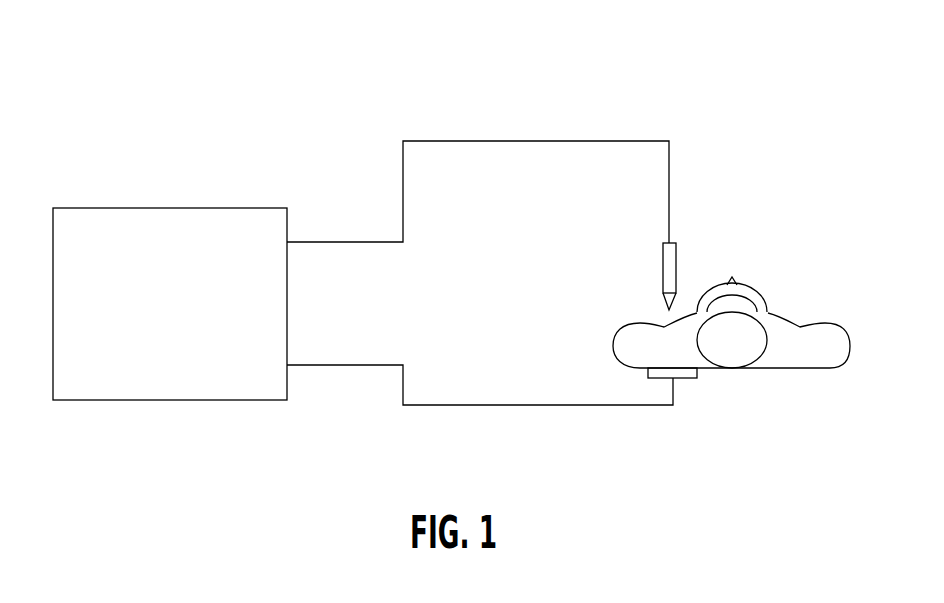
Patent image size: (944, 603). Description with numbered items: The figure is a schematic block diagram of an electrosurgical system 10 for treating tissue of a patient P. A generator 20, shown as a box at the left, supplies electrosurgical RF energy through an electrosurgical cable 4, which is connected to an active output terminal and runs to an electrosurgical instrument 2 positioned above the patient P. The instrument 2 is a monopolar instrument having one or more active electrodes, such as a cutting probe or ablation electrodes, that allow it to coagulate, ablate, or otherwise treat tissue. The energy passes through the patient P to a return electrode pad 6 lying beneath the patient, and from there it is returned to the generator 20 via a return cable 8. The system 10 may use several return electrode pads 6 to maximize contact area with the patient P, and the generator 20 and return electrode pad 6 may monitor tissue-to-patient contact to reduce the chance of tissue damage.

The electrosurgical system 10 is at (688, 52).
The generator 20 is at (98, 208).
The electrosurgical cable 4 is at (536, 141).
The electrosurgical instrument 2 is at (663, 272).
The return cable 8 is at (553, 405).
The return electrode pad 6 is at (689, 378).
The patient P is at (818, 302).